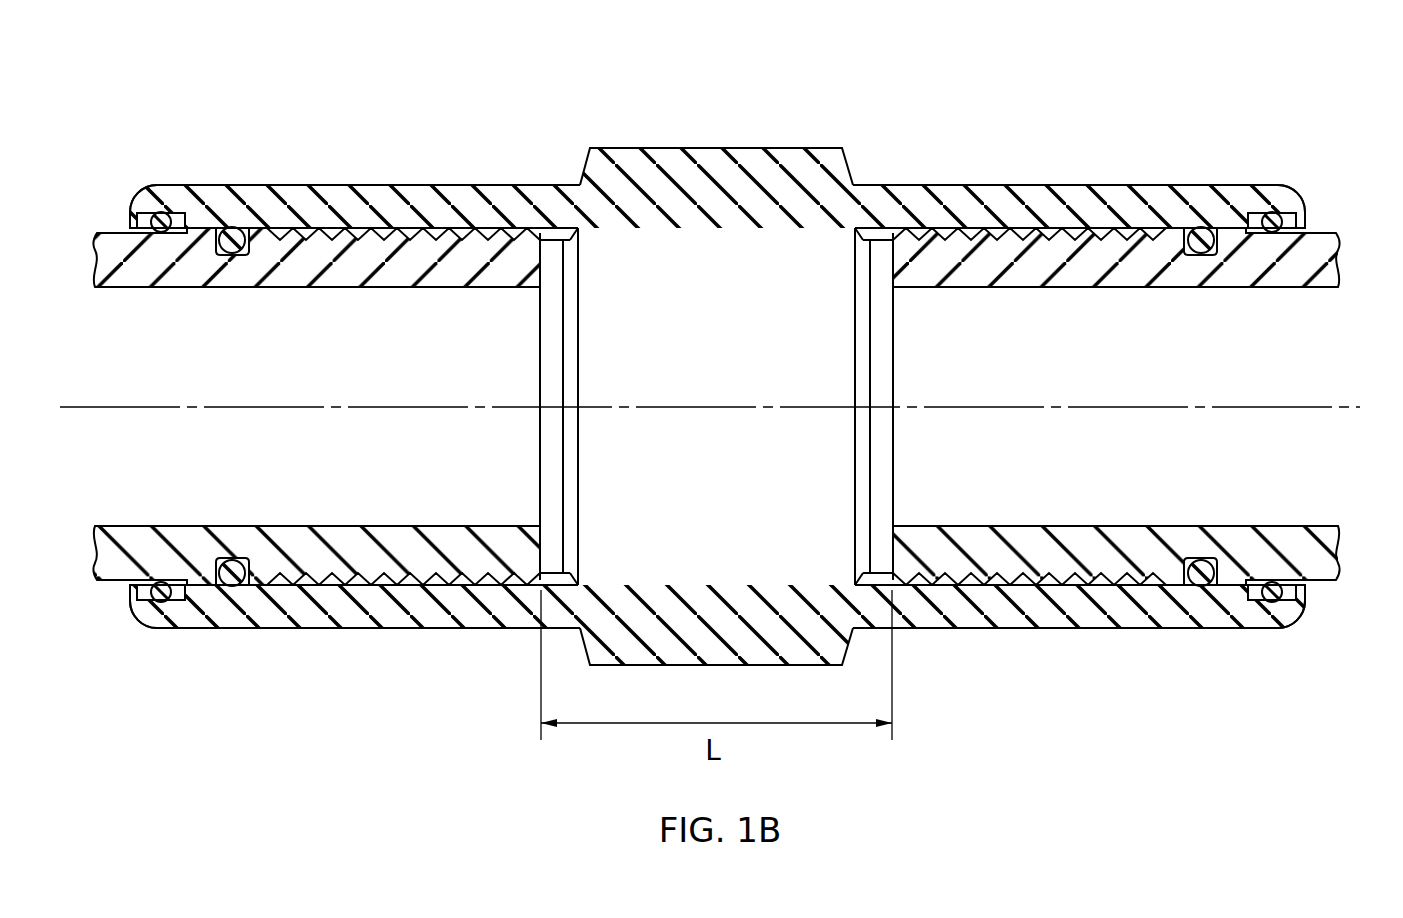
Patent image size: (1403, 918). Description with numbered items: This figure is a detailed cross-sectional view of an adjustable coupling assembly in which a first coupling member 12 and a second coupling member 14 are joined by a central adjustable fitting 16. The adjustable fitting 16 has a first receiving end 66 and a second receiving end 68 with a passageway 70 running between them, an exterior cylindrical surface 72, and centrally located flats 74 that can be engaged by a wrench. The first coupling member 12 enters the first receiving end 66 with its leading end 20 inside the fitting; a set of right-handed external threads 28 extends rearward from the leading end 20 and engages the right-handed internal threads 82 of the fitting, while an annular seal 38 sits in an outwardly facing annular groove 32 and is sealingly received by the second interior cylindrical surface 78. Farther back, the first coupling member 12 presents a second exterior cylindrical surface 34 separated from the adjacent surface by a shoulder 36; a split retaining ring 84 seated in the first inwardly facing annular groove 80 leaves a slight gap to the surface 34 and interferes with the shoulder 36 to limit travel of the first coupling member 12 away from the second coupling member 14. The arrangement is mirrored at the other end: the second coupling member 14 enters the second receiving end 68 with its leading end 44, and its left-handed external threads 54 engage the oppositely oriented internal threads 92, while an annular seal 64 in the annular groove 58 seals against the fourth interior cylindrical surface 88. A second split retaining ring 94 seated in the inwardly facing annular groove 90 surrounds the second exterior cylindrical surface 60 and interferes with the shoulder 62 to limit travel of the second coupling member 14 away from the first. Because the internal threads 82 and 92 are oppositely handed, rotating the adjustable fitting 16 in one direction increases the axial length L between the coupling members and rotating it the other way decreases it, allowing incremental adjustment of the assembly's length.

The first coupling member 12 is at (115, 593).
The second coupling member 14 is at (1316, 594).
The adjustable fitting 16 is at (677, 92).
The leading end 20 is at (542, 266).
The external threads 28 is at (373, 240).
The annular groove 32 is at (236, 254).
The second exterior cylindrical surface 34 is at (128, 240).
The shoulder 36 is at (203, 237).
The annular seal 38 is at (225, 230).
The leading end 44 is at (892, 266).
The external threads 54 is at (1048, 245).
The annular groove 58 is at (1183, 250).
The second exterior cylindrical surface 60 is at (1325, 245).
The shoulder 62 is at (1225, 248).
The annular seal 64 is at (1198, 228).
The first receiving end 66 is at (142, 210).
The second receiving end 68 is at (1290, 212).
The passageway 70 is at (697, 343).
The exterior cylindrical surface 72 is at (282, 185).
The flats 74 is at (792, 148).
The second interior cylindrical surface 78 is at (338, 230).
The first inwardly facing annular groove 80 is at (177, 600).
The internal threads 82 is at (503, 200).
The retaining ring 84 is at (162, 607).
The fourth interior cylindrical surface 88 is at (1080, 222).
The inwardly facing annular groove 90 is at (1257, 600).
The internal threads 92 is at (960, 222).
The retaining ring 94 is at (1277, 600).